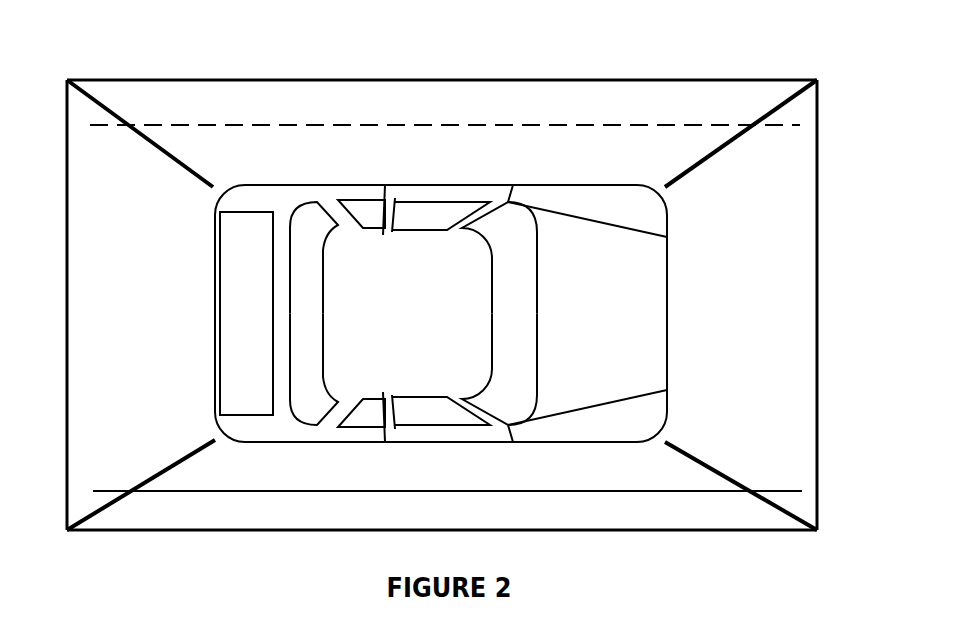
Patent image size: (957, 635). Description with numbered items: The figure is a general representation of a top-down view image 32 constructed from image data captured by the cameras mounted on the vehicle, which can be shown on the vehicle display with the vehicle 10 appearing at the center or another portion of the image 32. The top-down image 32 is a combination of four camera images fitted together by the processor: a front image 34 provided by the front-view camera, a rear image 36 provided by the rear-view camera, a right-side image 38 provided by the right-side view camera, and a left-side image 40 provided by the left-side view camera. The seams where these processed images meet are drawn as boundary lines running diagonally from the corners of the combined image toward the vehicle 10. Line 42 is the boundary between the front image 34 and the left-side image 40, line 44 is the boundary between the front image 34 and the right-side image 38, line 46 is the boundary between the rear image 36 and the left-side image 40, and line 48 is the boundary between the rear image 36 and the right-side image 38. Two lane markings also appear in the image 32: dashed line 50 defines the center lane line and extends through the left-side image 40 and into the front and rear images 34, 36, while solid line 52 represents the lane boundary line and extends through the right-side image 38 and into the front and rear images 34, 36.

The vehicle 10 is at (453, 185).
The top-down view image 32 is at (443, 297).
The front image 34 is at (765, 245).
The rear image 36 is at (127, 245).
The right-side image 38 is at (515, 505).
The left-side image 40 is at (337, 96).
The line 42 is at (722, 150).
The line 44 is at (685, 450).
The line 46 is at (190, 170).
The line 48 is at (192, 450).
The dashed line 50 is at (543, 126).
The solid line 52 is at (400, 491).